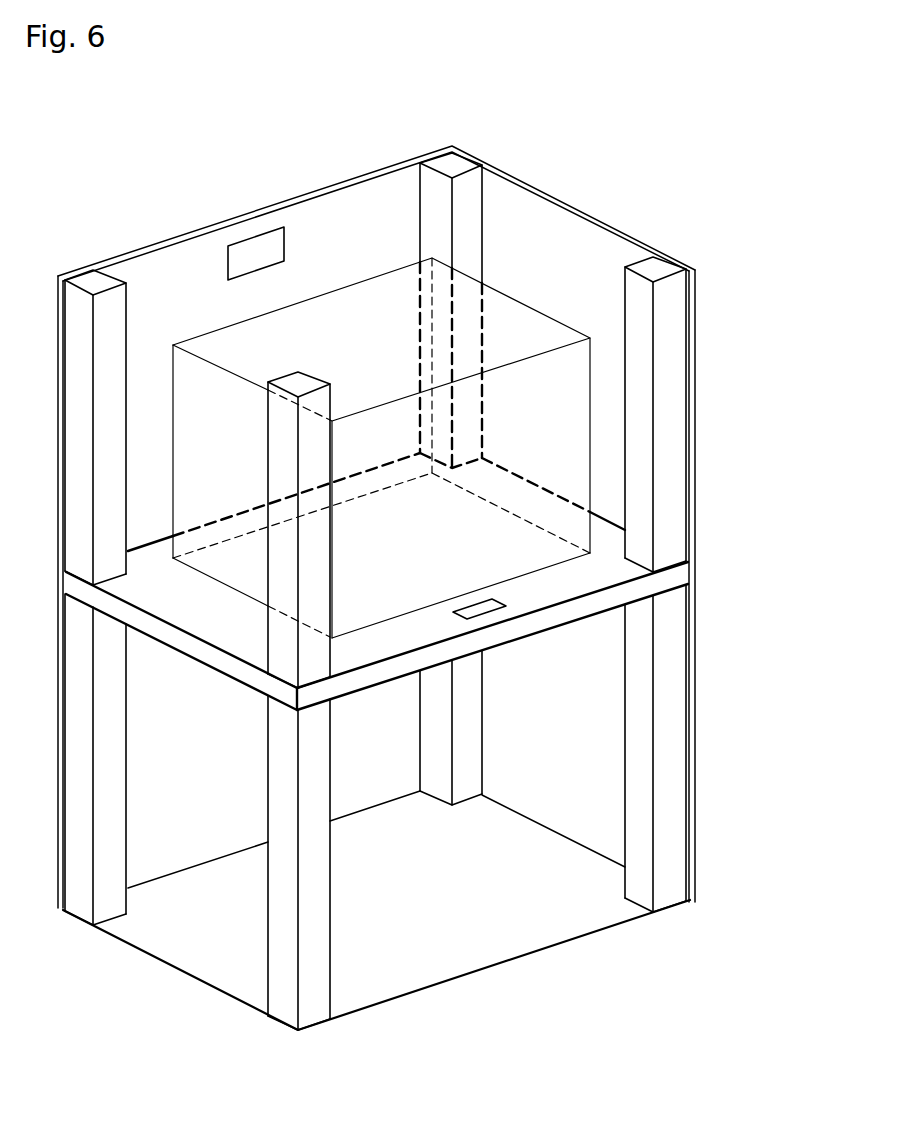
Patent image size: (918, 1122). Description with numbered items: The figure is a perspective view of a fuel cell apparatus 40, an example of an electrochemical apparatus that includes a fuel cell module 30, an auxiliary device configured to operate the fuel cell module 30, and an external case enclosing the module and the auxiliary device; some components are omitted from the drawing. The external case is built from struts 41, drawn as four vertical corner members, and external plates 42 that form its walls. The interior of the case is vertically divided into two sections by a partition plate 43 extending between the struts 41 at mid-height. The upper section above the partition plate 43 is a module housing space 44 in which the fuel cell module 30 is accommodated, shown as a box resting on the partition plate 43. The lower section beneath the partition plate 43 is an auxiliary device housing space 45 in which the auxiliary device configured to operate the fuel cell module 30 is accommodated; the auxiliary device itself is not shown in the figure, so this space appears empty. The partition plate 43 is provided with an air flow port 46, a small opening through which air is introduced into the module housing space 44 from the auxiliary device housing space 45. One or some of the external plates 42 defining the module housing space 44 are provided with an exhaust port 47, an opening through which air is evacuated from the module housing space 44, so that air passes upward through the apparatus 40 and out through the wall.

The fuel cell module 30 is at (520, 322).
The fuel cell apparatus 40 is at (303, 79).
The struts 41 is at (97, 276).
The external plates 42 is at (505, 173).
The partition plate 43 is at (668, 580).
The module housing space 44 is at (533, 240).
The auxiliary device housing space 45 is at (177, 760).
The air flow port 46 is at (487, 608).
The exhaust port 47 is at (248, 248).